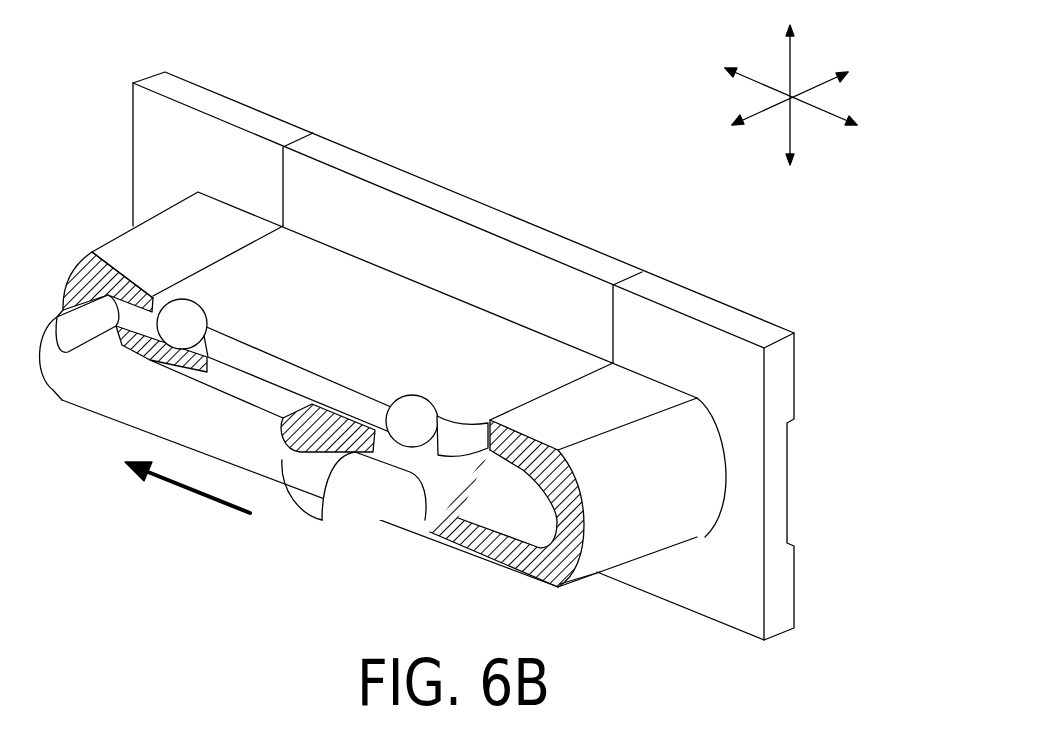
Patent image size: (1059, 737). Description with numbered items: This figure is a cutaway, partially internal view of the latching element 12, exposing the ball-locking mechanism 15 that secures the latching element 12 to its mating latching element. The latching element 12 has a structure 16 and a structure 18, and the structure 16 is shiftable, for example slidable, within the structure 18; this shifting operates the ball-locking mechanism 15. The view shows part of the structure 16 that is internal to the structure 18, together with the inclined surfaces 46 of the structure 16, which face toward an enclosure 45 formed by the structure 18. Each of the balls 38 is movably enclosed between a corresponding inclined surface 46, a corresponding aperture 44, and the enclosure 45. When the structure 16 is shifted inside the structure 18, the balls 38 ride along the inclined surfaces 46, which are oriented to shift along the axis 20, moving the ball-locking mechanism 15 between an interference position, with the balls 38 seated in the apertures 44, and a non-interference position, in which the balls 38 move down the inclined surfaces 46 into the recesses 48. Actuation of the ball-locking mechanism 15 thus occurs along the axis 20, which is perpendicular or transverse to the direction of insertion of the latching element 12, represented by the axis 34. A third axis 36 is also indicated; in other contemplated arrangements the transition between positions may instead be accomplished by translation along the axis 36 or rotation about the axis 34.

The latching element 12 is at (578, 253).
The ball-locking mechanism 15 is at (237, 437).
The structure 16 is at (400, 535).
The structure 18 is at (675, 508).
The axis 20 is at (828, 112).
The axis 34 is at (825, 84).
The axis 36 is at (789, 62).
The balls 38 is at (183, 308).
The aperture 44 is at (211, 319).
The enclosure 45 is at (627, 547).
The inclined surfaces 46 is at (103, 363).
The recesses 48 is at (62, 367).